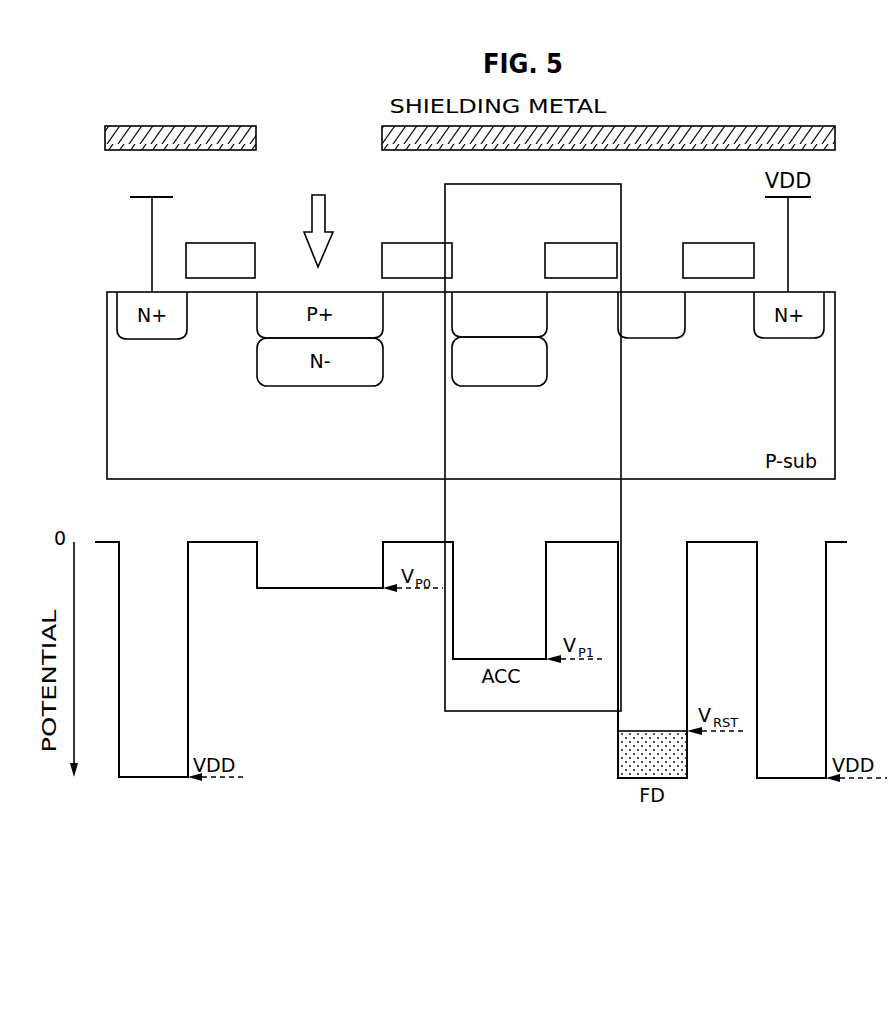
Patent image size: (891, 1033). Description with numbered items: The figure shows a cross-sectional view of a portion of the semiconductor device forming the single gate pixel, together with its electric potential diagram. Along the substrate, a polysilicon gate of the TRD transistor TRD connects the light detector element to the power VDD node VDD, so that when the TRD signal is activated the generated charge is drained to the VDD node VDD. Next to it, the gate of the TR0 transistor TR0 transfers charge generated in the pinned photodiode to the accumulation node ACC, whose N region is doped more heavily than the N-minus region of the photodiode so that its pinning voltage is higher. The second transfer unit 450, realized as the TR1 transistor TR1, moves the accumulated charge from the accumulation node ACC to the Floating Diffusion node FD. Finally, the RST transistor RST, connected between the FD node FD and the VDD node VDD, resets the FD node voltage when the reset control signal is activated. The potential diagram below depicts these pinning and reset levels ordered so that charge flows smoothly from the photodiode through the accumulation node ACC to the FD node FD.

The second transfer unit 450 is at (621, 184).
The power VDD node VDD is at (152, 230).
The TRD transistor TRD is at (220, 243).
The TR0 transistor TR0 is at (417, 243).
The TR1 transistor TR1 is at (581, 243).
The RST transistor RST is at (718, 243).
The accumulation (ACC) node ACC is at (499, 324).
The Floating Diffusion (FD) node FD is at (651, 300).